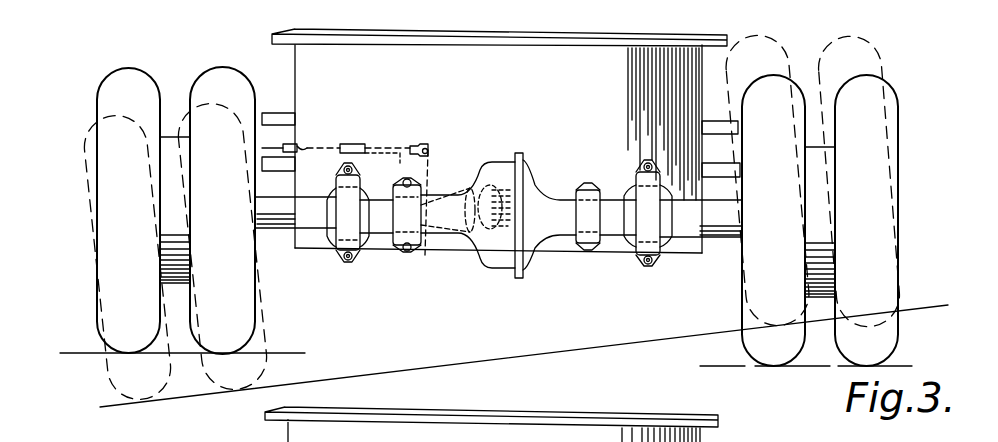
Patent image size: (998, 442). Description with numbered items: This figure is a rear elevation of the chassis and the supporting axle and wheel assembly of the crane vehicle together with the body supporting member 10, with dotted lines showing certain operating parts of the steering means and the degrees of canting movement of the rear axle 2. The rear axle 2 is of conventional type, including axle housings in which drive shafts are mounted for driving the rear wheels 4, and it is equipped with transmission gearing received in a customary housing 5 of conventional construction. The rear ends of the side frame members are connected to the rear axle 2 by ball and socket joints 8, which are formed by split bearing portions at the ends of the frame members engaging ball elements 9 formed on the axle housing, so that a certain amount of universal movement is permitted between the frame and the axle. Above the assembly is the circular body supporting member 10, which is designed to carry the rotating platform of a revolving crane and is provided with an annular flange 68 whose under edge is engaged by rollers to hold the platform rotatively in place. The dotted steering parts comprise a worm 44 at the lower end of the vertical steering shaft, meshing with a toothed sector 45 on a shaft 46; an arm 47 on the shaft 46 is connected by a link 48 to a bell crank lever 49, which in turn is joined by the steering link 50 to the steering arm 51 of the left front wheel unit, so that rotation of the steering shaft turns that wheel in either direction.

The rear axle 2 is at (316, 200).
The rear wheels 4 is at (128, 70).
The housing 5 is at (532, 168).
The ball and socket joints 8 is at (354, 260).
The ball elements 9 is at (330, 236).
The body supporting member 10 is at (702, 92).
The worm 44 is at (500, 236).
The toothed sector 45 is at (470, 196).
The shaft 46 is at (432, 244).
The arm 47 is at (428, 144).
The link 48 is at (400, 165).
The bell crank lever 49 is at (375, 128).
The steering link 50 is at (340, 146).
The steering arm 51 is at (290, 146).
The annular flange 68 is at (727, 40).